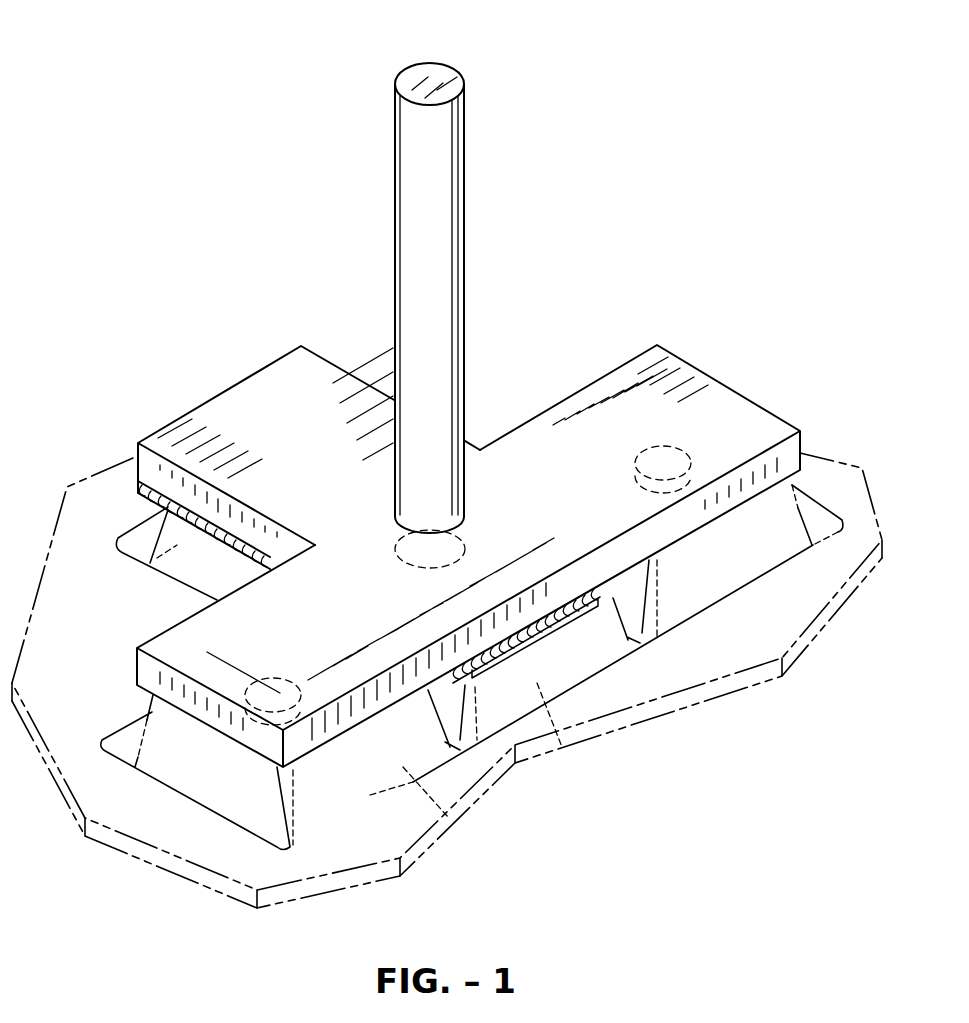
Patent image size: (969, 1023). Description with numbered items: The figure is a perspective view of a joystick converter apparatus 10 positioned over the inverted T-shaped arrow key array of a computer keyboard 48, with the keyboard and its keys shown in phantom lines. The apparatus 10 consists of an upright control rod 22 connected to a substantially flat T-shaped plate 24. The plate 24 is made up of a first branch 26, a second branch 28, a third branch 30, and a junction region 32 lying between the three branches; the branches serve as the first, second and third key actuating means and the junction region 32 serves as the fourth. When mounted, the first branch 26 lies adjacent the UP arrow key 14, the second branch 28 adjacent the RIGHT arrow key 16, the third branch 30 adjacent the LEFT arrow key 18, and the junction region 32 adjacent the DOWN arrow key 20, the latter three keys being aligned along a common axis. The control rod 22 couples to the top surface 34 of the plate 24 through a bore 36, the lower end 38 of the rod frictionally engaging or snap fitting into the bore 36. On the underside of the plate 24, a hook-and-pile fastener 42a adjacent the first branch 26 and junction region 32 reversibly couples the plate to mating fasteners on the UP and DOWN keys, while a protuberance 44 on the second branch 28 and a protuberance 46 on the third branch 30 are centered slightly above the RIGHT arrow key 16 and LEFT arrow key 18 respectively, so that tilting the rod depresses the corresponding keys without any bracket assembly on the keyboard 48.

The joystick converter apparatus 10 is at (218, 98).
The UP arrow key 14 is at (147, 565).
The RIGHT arrow key 16 is at (703, 570).
The LEFT arrow key 18 is at (450, 815).
The DOWN arrow key 20 is at (565, 748).
The control rod 22 is at (458, 187).
The T-shaped plate 24 is at (545, 388).
The first branch 26 is at (238, 407).
The second branch 28 is at (659, 383).
The third branch 30 is at (163, 650).
The junction region 32 is at (563, 553).
The top surface 34 is at (345, 473).
The bore 36 is at (467, 550).
The lower end 38 is at (478, 492).
The fastener 42a is at (140, 488).
The protuberance 44 is at (663, 446).
The protuberance 46 is at (277, 678).
The computer keyboard 48 is at (786, 696).